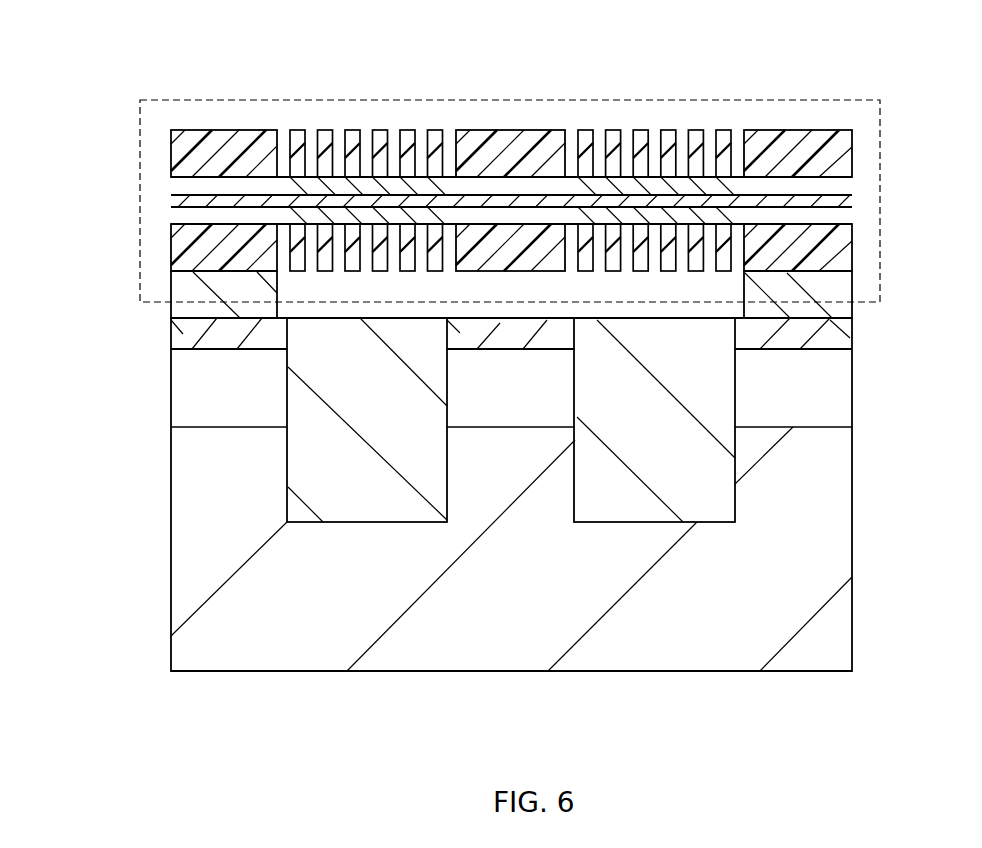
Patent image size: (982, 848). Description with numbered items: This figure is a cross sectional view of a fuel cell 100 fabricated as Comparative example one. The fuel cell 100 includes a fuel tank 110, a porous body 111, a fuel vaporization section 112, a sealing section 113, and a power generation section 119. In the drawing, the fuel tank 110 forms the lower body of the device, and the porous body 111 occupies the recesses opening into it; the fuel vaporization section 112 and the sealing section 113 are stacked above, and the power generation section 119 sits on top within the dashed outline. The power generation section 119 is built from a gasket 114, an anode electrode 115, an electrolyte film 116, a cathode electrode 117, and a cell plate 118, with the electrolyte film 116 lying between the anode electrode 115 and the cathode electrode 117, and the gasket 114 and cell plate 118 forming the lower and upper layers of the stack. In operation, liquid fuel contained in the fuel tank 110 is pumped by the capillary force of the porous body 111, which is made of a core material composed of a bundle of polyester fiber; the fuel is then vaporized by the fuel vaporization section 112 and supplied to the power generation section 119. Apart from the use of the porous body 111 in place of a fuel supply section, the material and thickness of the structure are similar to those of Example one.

The fuel cell 100 is at (511, 375).
The fuel tank 110 is at (833, 512).
The porous body 111 is at (360, 392).
The fuel vaporization section 112 is at (182, 331).
The sealing section 113 is at (178, 285).
The gasket 114 is at (823, 252).
The anode electrode 115 is at (200, 215).
The electrolyte film 116 is at (850, 197).
The cathode electrode 117 is at (200, 185).
The cell plate 118 is at (181, 148).
The power generation section 119 is at (507, 98).